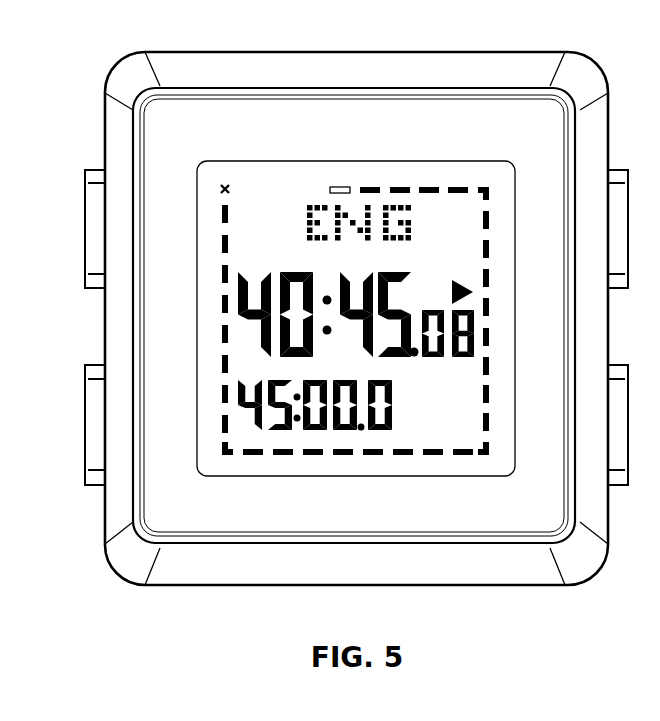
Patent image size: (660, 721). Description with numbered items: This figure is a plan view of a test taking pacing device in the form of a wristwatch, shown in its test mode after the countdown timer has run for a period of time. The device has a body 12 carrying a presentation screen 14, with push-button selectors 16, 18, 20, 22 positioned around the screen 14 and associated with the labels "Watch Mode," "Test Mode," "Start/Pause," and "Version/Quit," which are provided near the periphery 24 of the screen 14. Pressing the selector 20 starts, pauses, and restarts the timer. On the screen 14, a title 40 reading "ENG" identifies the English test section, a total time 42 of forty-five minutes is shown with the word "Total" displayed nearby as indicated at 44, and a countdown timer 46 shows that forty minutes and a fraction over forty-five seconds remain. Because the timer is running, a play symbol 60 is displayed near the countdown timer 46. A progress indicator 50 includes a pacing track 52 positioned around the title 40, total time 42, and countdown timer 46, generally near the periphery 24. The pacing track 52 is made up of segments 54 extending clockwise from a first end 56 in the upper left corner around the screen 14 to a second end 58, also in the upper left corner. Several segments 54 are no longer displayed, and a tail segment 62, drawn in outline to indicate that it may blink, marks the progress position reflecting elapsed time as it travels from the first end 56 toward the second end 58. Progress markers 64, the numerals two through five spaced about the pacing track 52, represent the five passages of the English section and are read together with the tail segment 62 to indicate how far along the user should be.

The body 12 is at (197, 51).
The presentation screen 14 is at (488, 160).
The selector 16 is at (85, 383).
The selector 18 is at (85, 187).
The selector 20 is at (628, 187).
The selector 22 is at (628, 383).
The periphery 24 is at (470, 517).
The title 40 is at (413, 225).
The total time 42 is at (393, 410).
The word "Total" 44 is at (246, 362).
The countdown timer 46 is at (285, 271).
The progress indicator 50 is at (337, 463).
The pacing track 52 is at (250, 457).
The segments 54 is at (370, 187).
The first end 56 is at (233, 181).
The second end 58 is at (218, 202).
The play symbol 60 is at (461, 279).
The tail segment 62 is at (338, 186).
The progress markers 64 is at (458, 178).